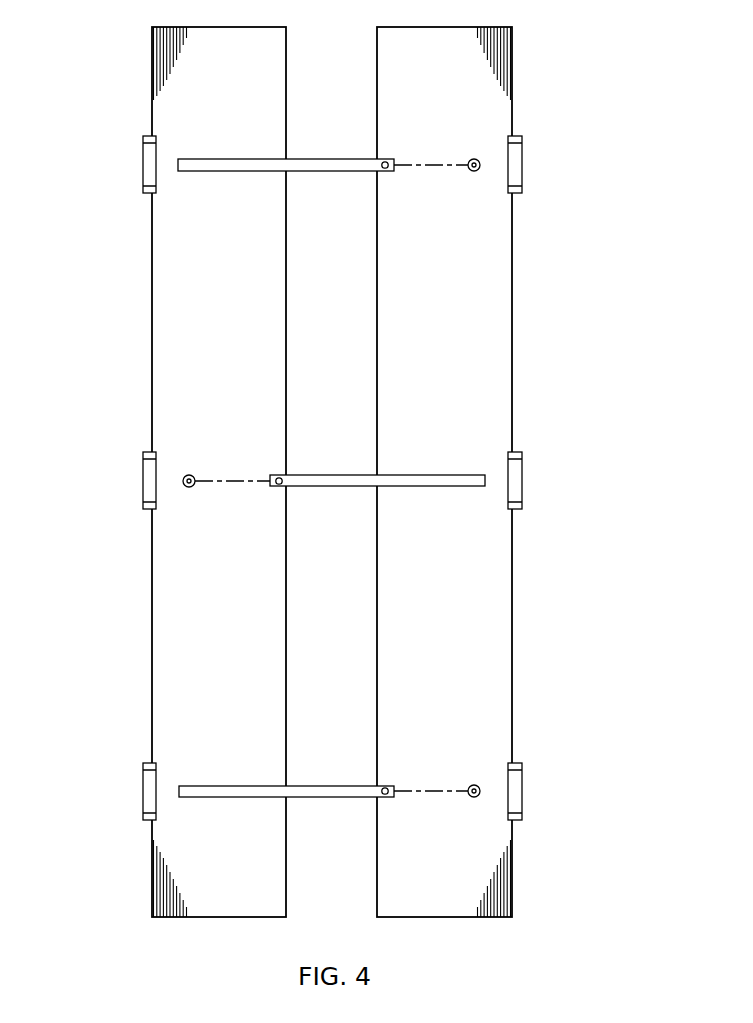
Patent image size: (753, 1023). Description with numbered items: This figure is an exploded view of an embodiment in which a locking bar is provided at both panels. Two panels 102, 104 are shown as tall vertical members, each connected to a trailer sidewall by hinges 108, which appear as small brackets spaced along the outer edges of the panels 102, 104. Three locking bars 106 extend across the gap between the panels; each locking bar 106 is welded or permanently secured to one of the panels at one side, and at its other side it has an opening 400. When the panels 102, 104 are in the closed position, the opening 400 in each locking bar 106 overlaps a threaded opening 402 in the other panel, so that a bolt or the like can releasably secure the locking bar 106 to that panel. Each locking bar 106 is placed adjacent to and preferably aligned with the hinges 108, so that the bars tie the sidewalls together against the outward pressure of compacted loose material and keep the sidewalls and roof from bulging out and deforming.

The panel 102 is at (460, 558).
The panel 104 is at (176, 290).
The locking bar 106 is at (190, 165).
The hinges 108 is at (143, 150).
The openings 400 is at (394, 162).
The threaded openings 402 is at (476, 171).